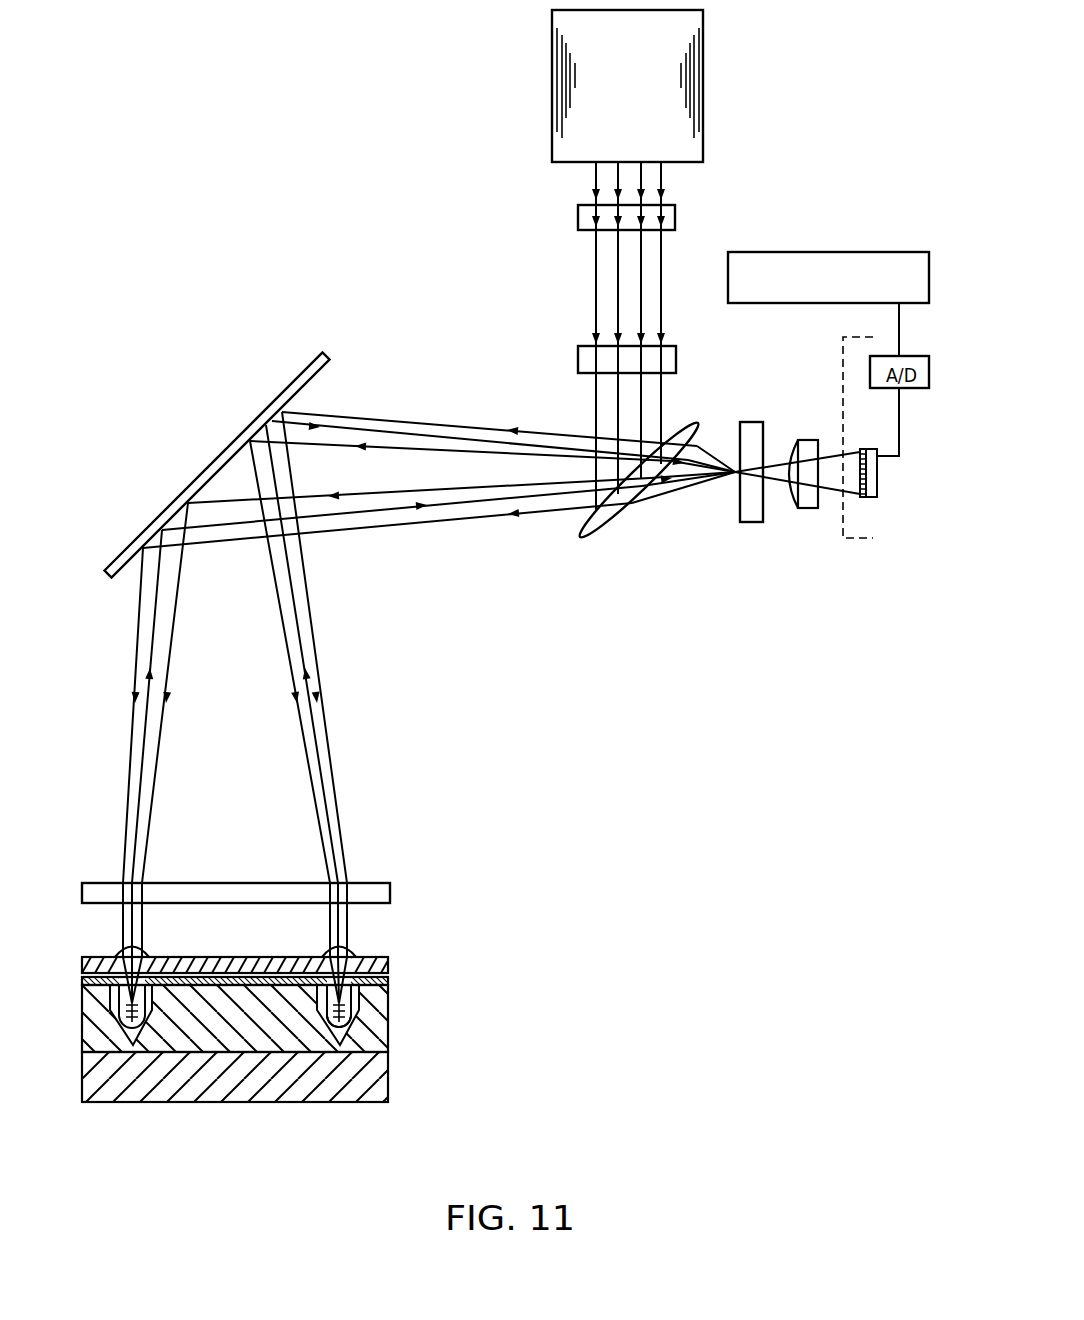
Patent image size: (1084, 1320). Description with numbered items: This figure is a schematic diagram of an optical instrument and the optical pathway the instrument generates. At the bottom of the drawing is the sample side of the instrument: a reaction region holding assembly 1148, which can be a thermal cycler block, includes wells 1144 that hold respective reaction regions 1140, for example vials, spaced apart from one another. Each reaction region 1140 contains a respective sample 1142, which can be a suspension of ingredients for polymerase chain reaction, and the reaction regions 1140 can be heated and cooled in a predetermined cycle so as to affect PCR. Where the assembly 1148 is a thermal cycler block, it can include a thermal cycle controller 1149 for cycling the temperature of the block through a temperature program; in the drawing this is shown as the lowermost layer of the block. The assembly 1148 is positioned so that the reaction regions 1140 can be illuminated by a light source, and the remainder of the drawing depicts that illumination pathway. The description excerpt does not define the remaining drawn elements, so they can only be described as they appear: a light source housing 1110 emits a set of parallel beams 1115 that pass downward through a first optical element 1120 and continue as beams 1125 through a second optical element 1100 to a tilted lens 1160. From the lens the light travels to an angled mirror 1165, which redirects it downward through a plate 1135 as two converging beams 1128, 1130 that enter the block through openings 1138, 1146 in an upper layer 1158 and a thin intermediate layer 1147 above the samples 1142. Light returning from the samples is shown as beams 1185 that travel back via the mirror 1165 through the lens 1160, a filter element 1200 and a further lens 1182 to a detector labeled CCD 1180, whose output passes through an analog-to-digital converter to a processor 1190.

The light source 1110 is at (552, 63).
The light beams 1115 is at (662, 176).
The optical element 1120 is at (578, 218).
The light beams 1125 is at (661, 247).
The optical element 1100 is at (578, 360).
The processor 1190 is at (888, 252).
The CCD detector 1180 is at (866, 497).
The mirror 1165 is at (202, 472).
The reflected light beams 1185 is at (385, 508).
The lens 1160 is at (587, 533).
The optical filter 1200 is at (752, 523).
The lens 1182 is at (797, 508).
The plate 1135 is at (250, 883).
The focused beam 1128 is at (122, 908).
The focused beam 1130 is at (328, 952).
The aperture 1138 is at (147, 955).
The aperture 1146 is at (362, 958).
The top layer 1158 is at (390, 962).
The thin layer 1147 is at (390, 980).
The sample 1142 is at (340, 1017).
The reaction region holding assembly 1148 is at (390, 1029).
The reaction region 1140 is at (345, 1030).
The well 1144 is at (342, 1036).
The thermal cycle controller 1149 is at (390, 1096).